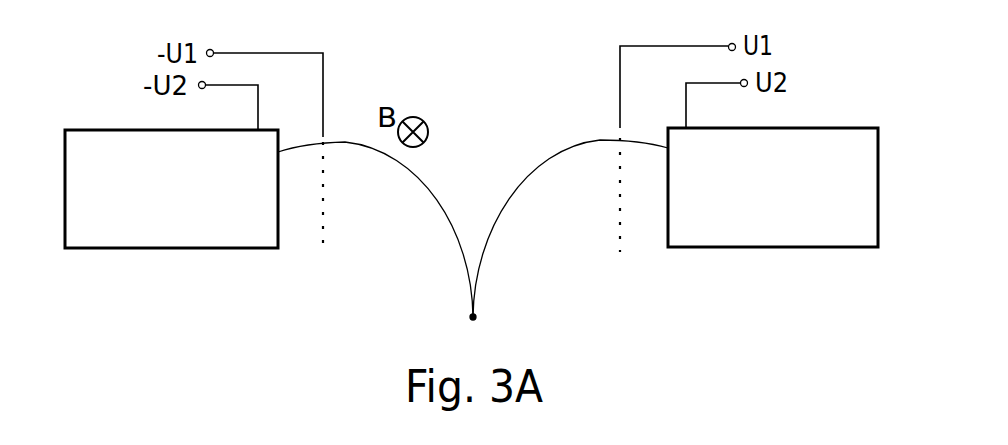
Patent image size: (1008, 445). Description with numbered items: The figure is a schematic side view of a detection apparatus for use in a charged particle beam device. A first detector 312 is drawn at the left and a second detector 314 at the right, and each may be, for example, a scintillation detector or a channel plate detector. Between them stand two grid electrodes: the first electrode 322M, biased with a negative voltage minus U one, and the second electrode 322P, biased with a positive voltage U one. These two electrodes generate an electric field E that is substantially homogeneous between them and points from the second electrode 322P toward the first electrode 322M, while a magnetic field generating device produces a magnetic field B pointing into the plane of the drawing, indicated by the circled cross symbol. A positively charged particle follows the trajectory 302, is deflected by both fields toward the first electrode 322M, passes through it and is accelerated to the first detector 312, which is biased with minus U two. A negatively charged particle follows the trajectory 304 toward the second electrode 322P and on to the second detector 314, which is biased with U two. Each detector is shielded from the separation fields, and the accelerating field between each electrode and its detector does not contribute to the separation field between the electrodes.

The trajectory of a positively charged particle 302 is at (352, 143).
The trajectory of a negatively charged particle 304 is at (550, 153).
The first detector 312 is at (122, 237).
The second detector 314 is at (818, 235).
The first electrode 322M is at (323, 235).
The second electrode 322P is at (620, 237).